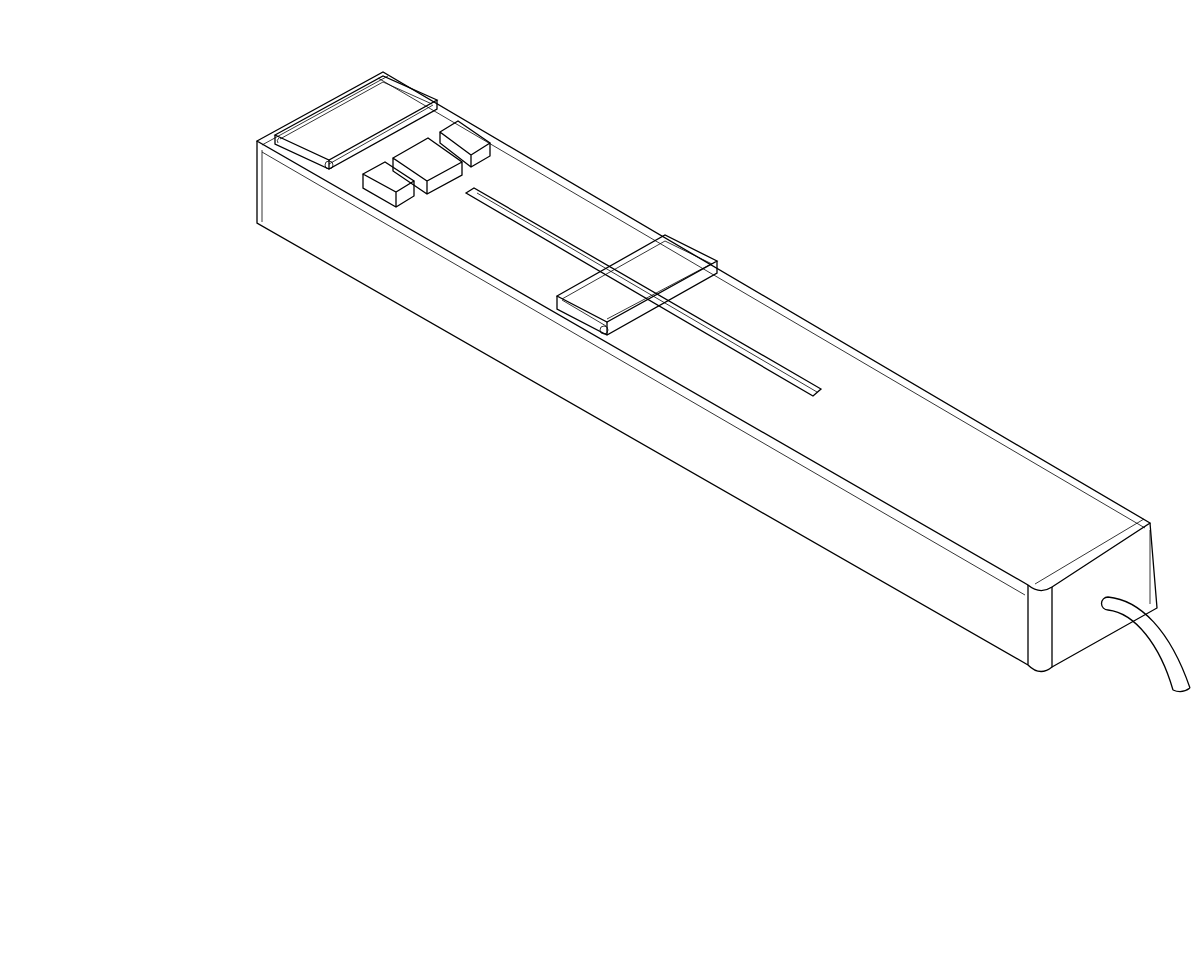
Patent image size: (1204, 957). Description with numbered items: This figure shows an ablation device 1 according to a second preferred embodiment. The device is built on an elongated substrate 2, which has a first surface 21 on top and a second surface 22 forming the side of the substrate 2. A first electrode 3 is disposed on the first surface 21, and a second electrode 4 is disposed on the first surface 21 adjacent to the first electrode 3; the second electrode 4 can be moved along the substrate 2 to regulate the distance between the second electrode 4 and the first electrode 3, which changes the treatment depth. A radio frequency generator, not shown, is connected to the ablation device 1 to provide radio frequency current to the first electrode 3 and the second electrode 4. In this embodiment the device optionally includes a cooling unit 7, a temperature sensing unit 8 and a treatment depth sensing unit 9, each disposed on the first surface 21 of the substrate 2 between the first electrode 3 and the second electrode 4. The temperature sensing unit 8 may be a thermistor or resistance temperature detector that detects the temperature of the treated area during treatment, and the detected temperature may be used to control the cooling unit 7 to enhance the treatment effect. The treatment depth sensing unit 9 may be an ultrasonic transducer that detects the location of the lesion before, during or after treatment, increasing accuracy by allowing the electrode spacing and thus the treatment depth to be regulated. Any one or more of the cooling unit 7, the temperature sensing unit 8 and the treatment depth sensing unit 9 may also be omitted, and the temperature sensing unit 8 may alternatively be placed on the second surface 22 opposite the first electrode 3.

The ablation device 1 is at (206, 93).
The substrate 2 is at (580, 392).
The first surface 21 is at (1073, 508).
The second surface 22 is at (910, 602).
The first electrode 3 is at (338, 110).
The second electrode 4 is at (676, 252).
The cooling unit 7 is at (422, 153).
The temperature sensing unit 8 is at (468, 140).
The treatment depth sensing unit 9 is at (388, 180).